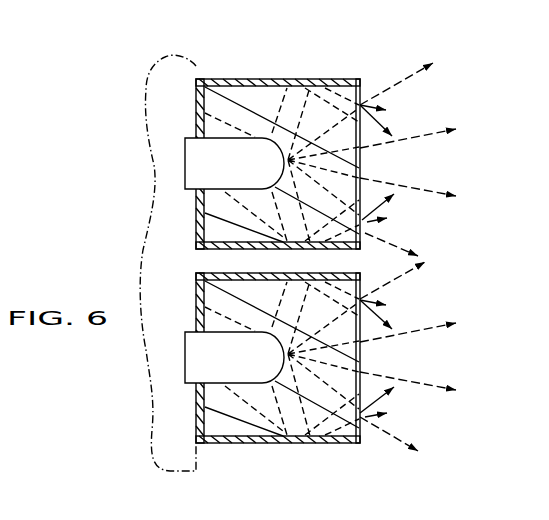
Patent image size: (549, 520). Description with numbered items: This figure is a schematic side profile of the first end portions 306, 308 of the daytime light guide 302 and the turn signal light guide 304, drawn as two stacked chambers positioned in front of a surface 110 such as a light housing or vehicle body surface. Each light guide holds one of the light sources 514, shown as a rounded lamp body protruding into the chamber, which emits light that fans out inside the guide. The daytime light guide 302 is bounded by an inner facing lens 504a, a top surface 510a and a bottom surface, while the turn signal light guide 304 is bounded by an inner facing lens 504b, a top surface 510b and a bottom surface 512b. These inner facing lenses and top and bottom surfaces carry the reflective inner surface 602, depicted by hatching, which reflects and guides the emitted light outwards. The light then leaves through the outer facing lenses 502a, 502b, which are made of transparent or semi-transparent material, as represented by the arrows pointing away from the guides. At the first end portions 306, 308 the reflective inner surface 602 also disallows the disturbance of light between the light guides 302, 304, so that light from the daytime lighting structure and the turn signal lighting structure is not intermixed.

The surface 110 is at (197, 78).
The reflective inner surface 602 is at (256, 79).
The top surface 510b is at (294, 79).
The top surface 510a is at (316, 248).
The bottom surface 512b is at (276, 273).
The inner facing lens 504b is at (229, 148).
The inner facing lens 504a is at (219, 377).
The light source 514 is at (212, 158).
The outer facing lens 502b is at (360, 168).
The outer facing lens 502a is at (360, 363).
The daytime light guide 302 is at (360, 92).
The first end portion 306 is at (360, 227).
The turn signal light guide 304 is at (360, 287).
The first end portion 308 is at (360, 430).